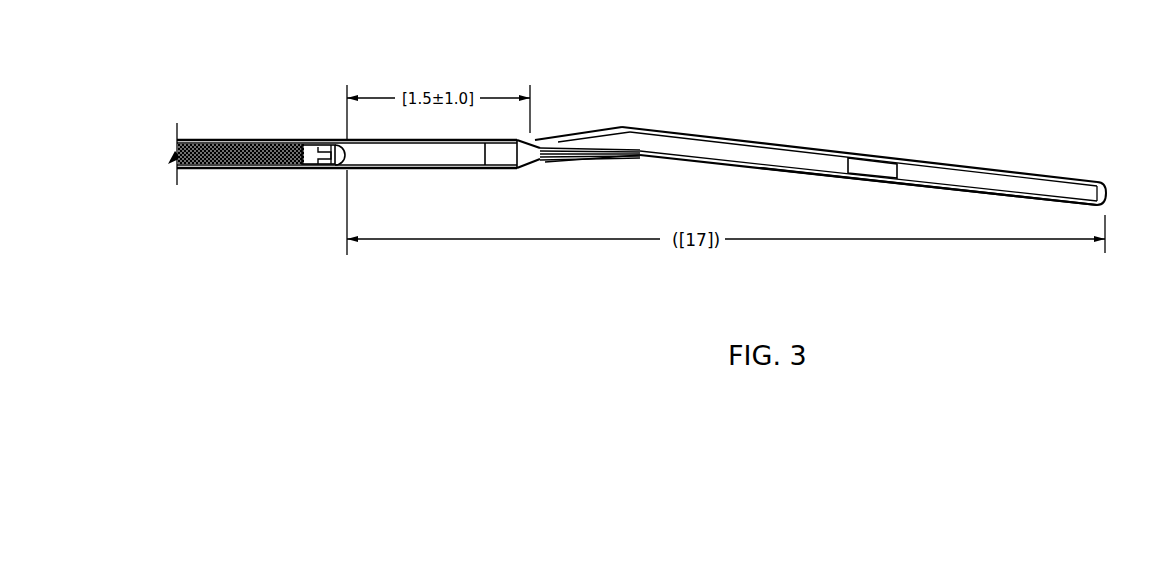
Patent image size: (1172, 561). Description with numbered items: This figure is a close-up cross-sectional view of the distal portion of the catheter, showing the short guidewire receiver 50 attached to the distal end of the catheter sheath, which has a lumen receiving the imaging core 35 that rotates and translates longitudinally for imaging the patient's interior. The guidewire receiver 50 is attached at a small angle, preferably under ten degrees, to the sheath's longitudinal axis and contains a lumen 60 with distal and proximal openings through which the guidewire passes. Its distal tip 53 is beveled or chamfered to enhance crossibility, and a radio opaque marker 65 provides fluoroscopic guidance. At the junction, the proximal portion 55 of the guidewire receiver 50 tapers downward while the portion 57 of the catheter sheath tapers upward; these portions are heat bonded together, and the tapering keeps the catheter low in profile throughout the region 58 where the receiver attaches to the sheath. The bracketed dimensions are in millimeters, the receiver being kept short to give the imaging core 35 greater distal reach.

The imaging core 35 is at (297, 140).
The guidewire receiver 50 is at (957, 162).
The distal tip 53 is at (1106, 181).
The proximal portion 55 is at (585, 128).
The portion of the catheter sheath 57 is at (577, 150).
The region 58 is at (600, 176).
The lumen 60 is at (1000, 182).
The radio opaque marker 65 is at (878, 157).